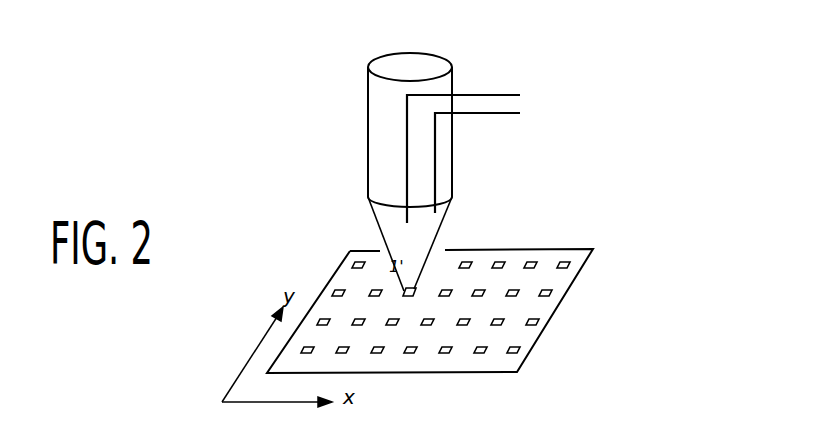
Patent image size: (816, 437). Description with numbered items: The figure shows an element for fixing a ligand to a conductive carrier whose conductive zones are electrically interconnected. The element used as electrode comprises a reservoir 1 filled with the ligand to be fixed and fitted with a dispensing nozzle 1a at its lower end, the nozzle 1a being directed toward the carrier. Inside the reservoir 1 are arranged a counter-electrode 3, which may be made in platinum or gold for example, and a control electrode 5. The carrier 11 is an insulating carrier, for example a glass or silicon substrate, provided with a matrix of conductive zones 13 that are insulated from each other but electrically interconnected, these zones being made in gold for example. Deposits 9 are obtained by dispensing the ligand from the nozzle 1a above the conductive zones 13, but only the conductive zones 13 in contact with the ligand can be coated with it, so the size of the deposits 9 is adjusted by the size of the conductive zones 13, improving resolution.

The reservoir 1 is at (376, 115).
The dispensing nozzle 1a is at (405, 292).
The counter-electrode 3 is at (496, 115).
The control electrode 5 is at (503, 92).
The deposits 9 is at (300, 347).
The insulating conductive carrier 11 is at (542, 305).
The conductive zones 13 is at (568, 263).